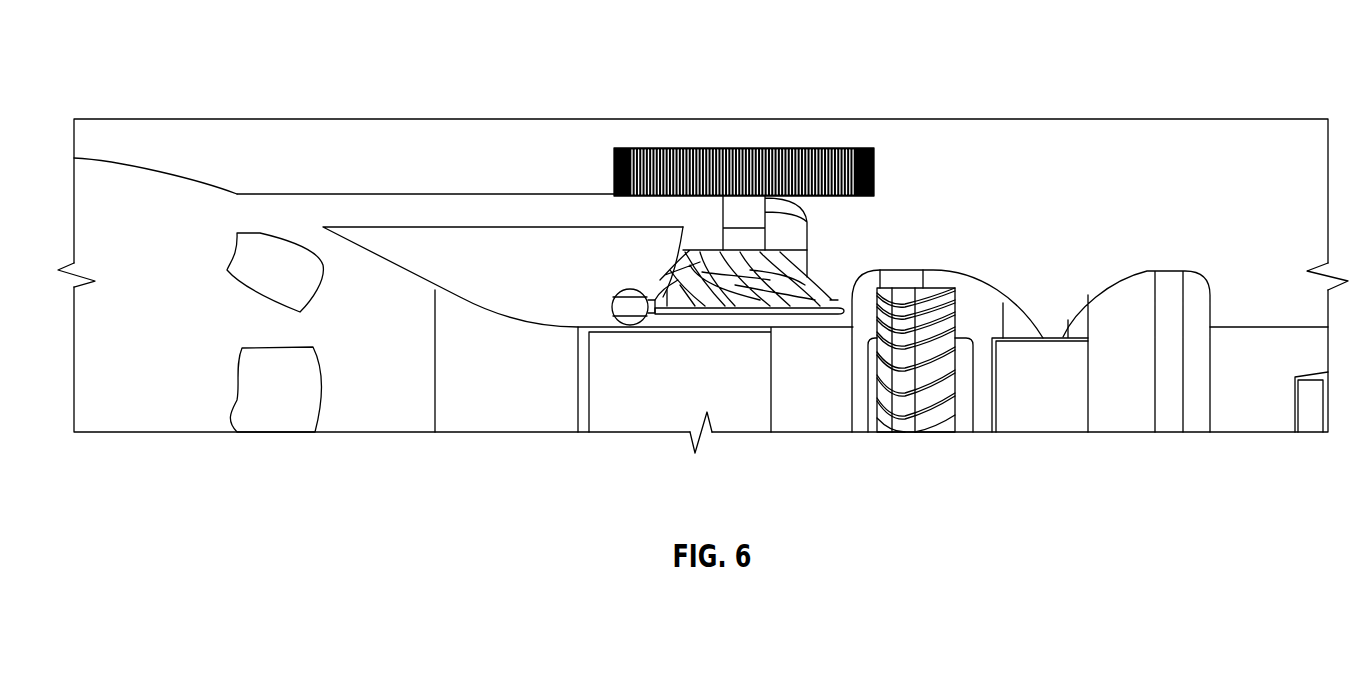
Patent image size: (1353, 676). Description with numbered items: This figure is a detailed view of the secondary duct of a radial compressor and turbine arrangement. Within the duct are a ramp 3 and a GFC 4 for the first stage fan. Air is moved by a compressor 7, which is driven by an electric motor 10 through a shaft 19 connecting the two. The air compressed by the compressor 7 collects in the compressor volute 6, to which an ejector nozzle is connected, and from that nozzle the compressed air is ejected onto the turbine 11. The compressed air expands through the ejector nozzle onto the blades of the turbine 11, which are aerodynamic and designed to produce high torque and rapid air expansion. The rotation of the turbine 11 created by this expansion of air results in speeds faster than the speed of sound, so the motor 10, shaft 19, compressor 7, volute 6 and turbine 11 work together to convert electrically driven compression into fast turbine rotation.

The ramp 3 is at (245, 194).
The GFC 4 is at (370, 194).
The electric motor 10 is at (720, 148).
The shaft 19 is at (807, 220).
The compressor 7 is at (803, 288).
The volute 6 is at (618, 298).
The turbine 11 is at (937, 288).